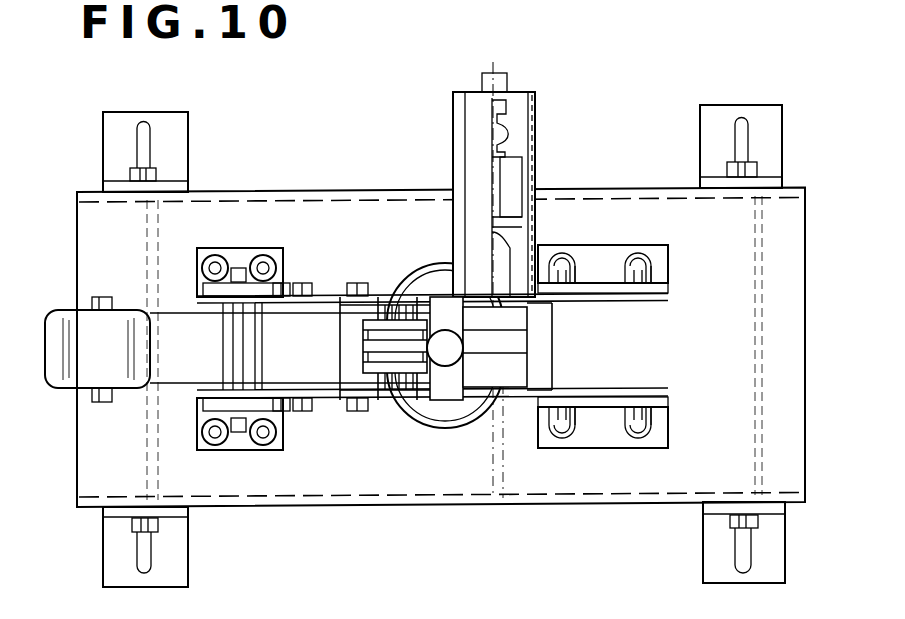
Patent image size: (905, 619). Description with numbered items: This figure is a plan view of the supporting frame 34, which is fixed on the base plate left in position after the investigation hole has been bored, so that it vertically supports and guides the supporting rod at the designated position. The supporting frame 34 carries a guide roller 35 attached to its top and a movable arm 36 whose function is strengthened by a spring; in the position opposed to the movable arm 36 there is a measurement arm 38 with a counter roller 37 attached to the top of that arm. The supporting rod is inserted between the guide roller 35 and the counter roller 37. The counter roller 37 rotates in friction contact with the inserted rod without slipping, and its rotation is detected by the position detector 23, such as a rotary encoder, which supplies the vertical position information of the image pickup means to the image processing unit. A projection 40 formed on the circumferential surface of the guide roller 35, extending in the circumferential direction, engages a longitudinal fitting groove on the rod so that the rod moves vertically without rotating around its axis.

The supporting frame 34 is at (84, 172).
The position detector 23 is at (507, 177).
The guide roller 35 is at (398, 300).
The movable arm 36 is at (343, 297).
The counter roller 37 is at (483, 375).
The measurement arm 38 is at (527, 382).
The projection 40 is at (397, 383).